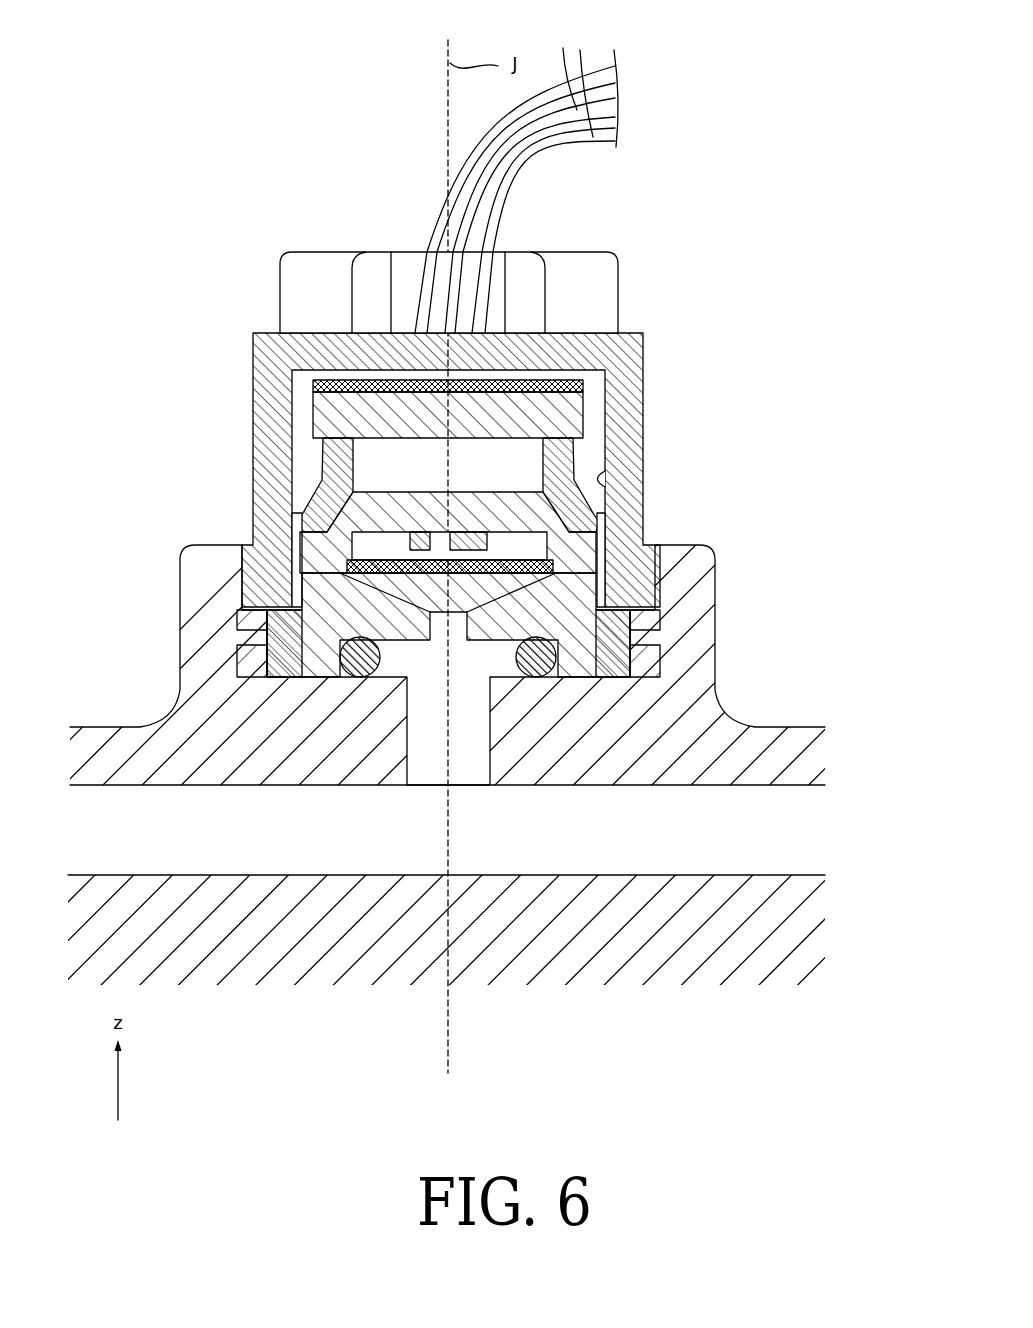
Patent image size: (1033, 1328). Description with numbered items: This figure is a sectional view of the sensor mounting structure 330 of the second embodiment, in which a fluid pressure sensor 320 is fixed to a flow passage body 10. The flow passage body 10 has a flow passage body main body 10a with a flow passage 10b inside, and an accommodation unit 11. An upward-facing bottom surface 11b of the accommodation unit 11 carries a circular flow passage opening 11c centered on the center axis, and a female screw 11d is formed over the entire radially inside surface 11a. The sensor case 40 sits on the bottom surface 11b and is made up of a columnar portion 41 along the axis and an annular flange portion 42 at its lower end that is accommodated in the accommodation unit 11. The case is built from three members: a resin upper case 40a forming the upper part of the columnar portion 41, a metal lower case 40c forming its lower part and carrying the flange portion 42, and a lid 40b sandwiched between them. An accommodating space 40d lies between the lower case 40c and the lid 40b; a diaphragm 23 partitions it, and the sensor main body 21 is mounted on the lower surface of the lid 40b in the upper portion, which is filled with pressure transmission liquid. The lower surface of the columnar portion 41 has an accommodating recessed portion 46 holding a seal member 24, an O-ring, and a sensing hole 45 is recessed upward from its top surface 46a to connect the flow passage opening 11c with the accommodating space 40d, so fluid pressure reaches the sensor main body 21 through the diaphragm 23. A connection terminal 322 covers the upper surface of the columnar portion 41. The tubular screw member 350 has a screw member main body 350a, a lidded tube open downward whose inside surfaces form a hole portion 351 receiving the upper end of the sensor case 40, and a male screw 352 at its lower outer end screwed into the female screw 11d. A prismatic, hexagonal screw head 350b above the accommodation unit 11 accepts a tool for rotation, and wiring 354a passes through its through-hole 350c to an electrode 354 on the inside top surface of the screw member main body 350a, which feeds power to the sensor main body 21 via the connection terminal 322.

The flow passage body 10 is at (147, 576).
The flow passage body main body 10a is at (792, 738).
The flow passage 10b is at (760, 821).
The accommodation unit 11 is at (712, 584).
The radially inside surface 11a is at (246, 548).
The bottom surface 11b is at (600, 640).
The flow passage opening 11c is at (410, 703).
The female screw 11d is at (663, 625).
The sensor main body 21 is at (475, 543).
The diaphragm 23 is at (427, 543).
The seal member 24 is at (400, 585).
The sensor case 40 is at (174, 384).
The upper case 40a is at (608, 383).
The lid 40b is at (503, 653).
The lower case 40c is at (550, 618).
The accommodating space 40d is at (315, 640).
The columnar portion 41 is at (300, 412).
The flange portion 42 is at (243, 598).
The sensing hole 45 is at (458, 650).
The accommodating recessed portion 46 is at (348, 668).
The top surface of accommodating recessed portion 46a is at (512, 640).
The fluid pressure sensor 320 is at (600, 425).
The connection terminal 322 is at (262, 375).
The sensor mounting structure 330 is at (283, 208).
The screw member 350 is at (653, 313).
The screw member main body 350a is at (632, 447).
The screw head 350b is at (600, 277).
The through-hole 350c is at (393, 272).
The hole portion 351 is at (607, 479).
The male screw 352 is at (655, 548).
The electrode 354 is at (527, 333).
The wiring 354a is at (574, 81).